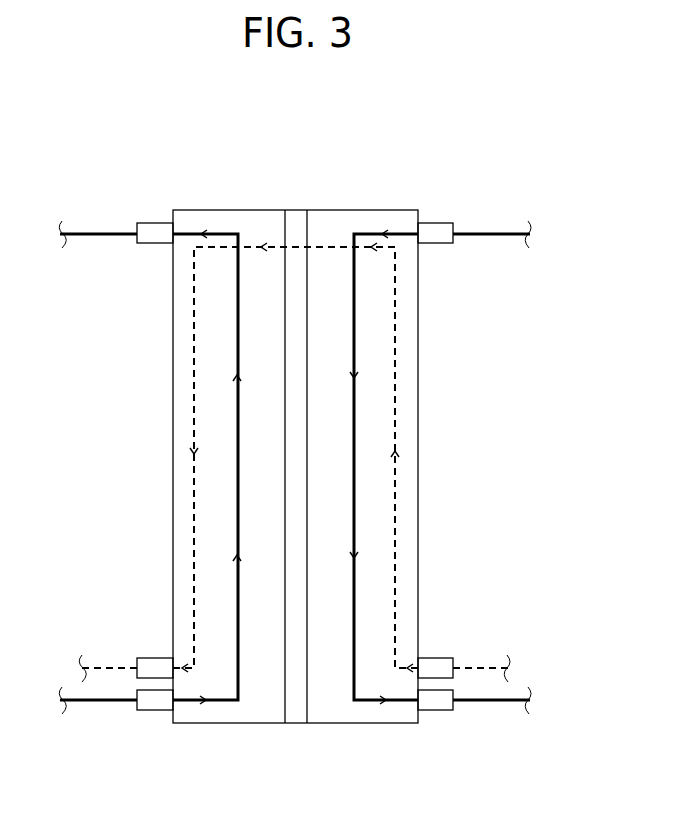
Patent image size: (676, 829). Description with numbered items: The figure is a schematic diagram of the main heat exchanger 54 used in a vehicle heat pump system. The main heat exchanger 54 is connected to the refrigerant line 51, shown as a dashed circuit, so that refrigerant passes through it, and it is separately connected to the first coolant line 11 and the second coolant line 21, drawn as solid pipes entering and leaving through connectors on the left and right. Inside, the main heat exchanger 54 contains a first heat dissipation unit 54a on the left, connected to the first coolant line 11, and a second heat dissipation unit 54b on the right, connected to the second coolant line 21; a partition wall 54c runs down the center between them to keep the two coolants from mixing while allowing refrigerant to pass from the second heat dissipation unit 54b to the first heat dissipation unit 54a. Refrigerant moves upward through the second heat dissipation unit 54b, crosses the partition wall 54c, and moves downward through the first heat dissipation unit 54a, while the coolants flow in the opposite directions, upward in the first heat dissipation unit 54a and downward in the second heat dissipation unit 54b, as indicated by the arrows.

The first coolant line 11 is at (98, 231).
The second coolant line 21 is at (490, 231).
The refrigerant line 51 is at (108, 662).
The main heat exchanger 54 is at (374, 168).
The first heat dissipation unit 54a is at (231, 725).
The second heat dissipation unit 54b is at (367, 725).
The partition wall 54c is at (297, 222).